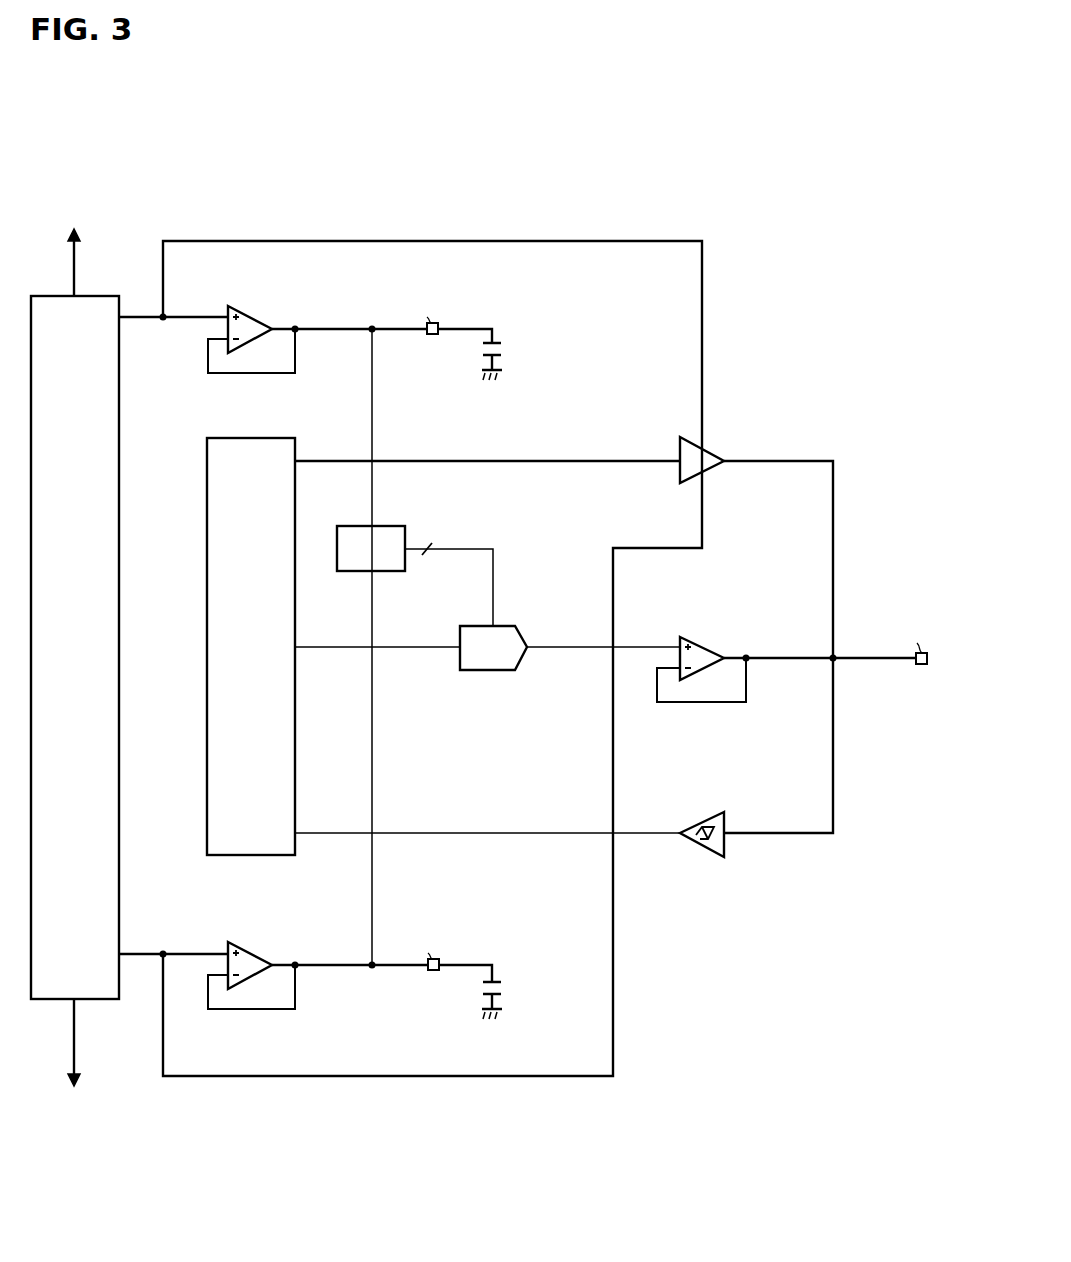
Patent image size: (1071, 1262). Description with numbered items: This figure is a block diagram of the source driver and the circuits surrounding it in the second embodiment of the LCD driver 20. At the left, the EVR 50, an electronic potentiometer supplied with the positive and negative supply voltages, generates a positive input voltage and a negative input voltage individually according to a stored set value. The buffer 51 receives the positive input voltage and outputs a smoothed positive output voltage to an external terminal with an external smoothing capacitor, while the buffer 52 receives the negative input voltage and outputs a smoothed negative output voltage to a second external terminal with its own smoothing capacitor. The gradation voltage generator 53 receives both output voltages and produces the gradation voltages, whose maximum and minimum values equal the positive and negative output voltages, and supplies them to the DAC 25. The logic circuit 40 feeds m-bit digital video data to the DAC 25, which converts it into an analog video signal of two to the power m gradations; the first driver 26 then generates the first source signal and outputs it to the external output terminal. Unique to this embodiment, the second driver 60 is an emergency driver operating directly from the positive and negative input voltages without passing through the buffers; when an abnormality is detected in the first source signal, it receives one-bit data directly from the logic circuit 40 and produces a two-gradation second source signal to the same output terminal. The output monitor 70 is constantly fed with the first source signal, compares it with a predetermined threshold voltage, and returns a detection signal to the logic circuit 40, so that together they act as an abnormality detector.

The LCD driver 20 is at (832, 329).
The EVR 50 is at (96, 296).
The buffer 51 is at (250, 312).
The buffer 52 is at (249, 951).
The logic circuit 40 is at (250, 438).
The gradation voltage generator 53 is at (393, 526).
The DAC 25 is at (503, 626).
The first driver 26 is at (700, 645).
The second driver 60 is at (712, 471).
The output monitor 70 is at (700, 818).